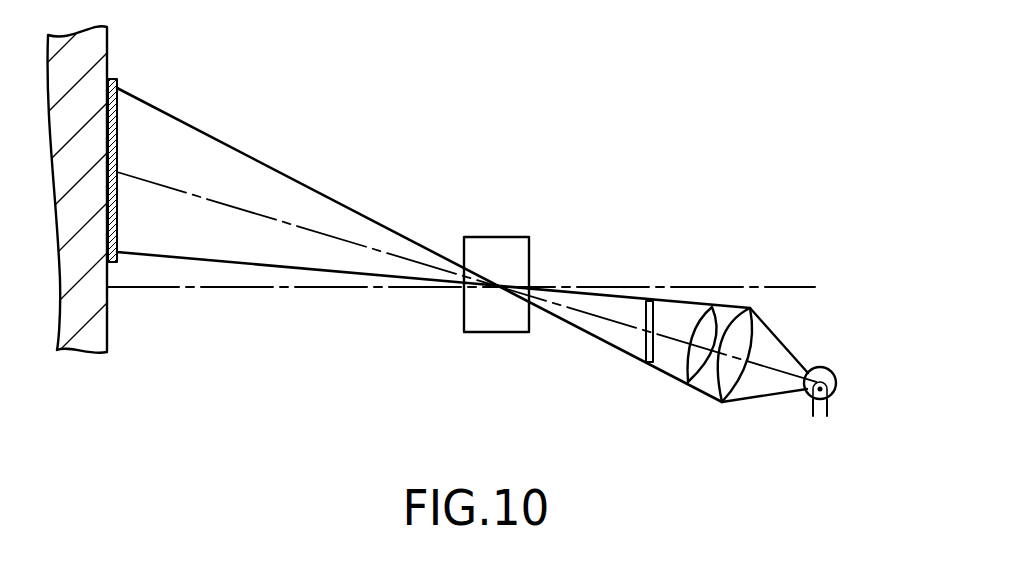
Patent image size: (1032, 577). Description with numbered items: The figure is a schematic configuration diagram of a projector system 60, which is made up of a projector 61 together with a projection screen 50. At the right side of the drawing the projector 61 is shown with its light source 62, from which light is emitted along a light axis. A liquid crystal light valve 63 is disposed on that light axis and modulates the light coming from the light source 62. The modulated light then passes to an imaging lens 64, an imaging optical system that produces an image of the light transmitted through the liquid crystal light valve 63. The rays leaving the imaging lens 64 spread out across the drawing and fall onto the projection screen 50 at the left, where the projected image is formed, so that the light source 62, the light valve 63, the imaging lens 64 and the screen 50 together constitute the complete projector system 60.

The projection screen 50 is at (93, 346).
The projector system 60 is at (541, 144).
The projector 61 is at (699, 242).
The light source 62 is at (836, 381).
The liquid crystal light valve 63 is at (649, 363).
The imaging lens 64 is at (498, 325).